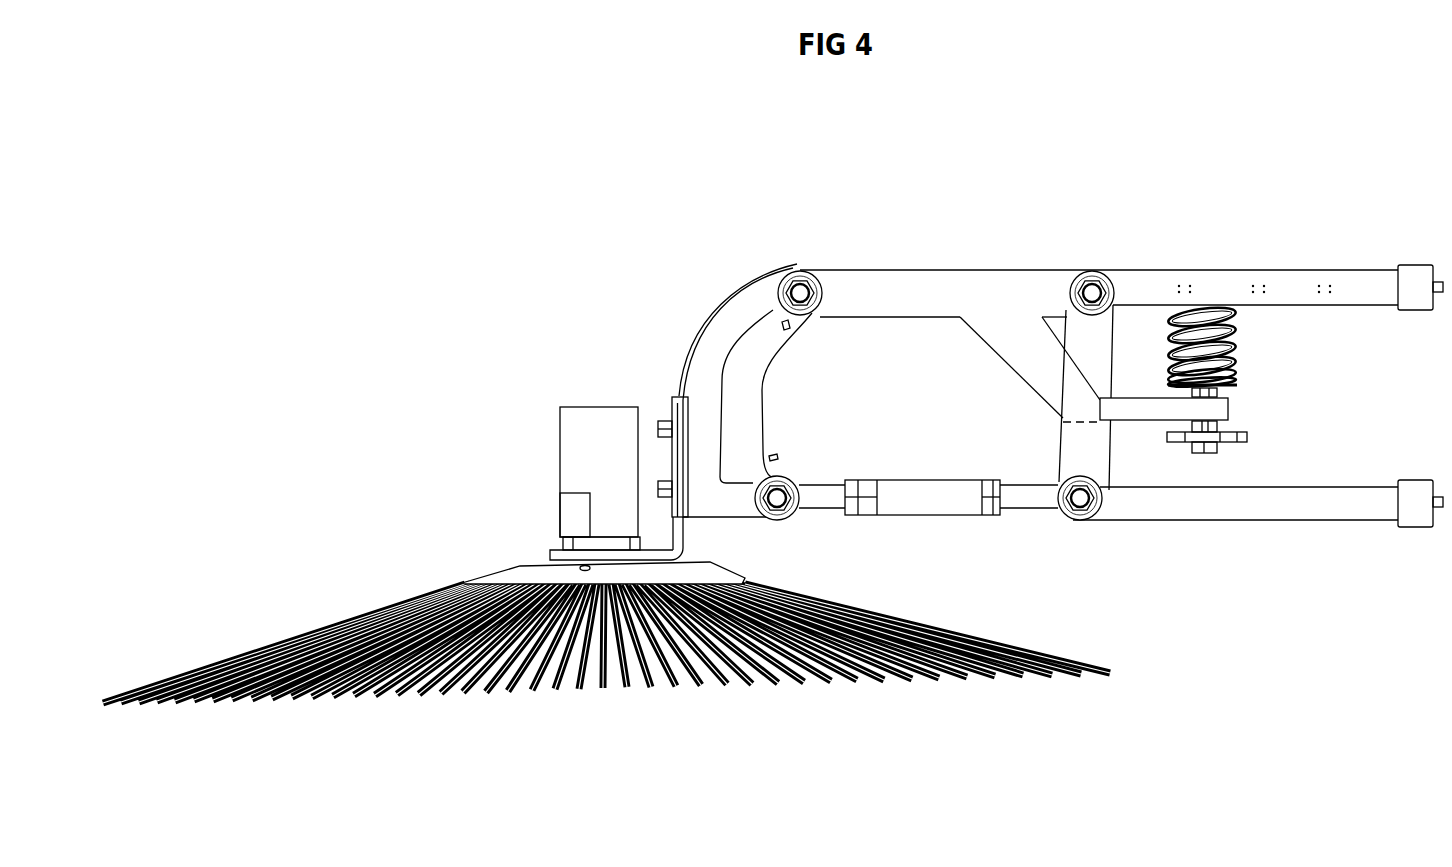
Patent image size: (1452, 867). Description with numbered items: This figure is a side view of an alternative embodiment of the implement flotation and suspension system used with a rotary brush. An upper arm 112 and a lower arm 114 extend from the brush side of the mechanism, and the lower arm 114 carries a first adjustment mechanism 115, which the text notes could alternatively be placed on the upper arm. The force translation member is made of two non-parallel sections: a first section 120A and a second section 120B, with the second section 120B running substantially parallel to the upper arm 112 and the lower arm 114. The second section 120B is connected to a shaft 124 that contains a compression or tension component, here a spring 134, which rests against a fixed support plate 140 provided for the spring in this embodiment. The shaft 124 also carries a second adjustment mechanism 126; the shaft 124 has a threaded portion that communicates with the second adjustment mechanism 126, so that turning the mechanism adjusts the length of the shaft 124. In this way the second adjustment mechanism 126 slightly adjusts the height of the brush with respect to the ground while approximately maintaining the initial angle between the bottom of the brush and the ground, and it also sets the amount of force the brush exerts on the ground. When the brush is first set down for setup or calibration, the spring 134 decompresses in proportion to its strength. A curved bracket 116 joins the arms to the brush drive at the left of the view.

The upper arm 112 is at (908, 267).
The lower arm 114 is at (827, 512).
The first adjustment mechanism 115 is at (930, 515).
The curved mounting bracket 116 is at (712, 313).
The first section of the force translation member 120A is at (1007, 367).
The second section of the force translation member 120B is at (1147, 423).
The shaft 124 is at (1220, 393).
The second adjustment mechanism 126 is at (1250, 440).
The spring 134 is at (1238, 343).
The fixed support plate 140 is at (1238, 385).